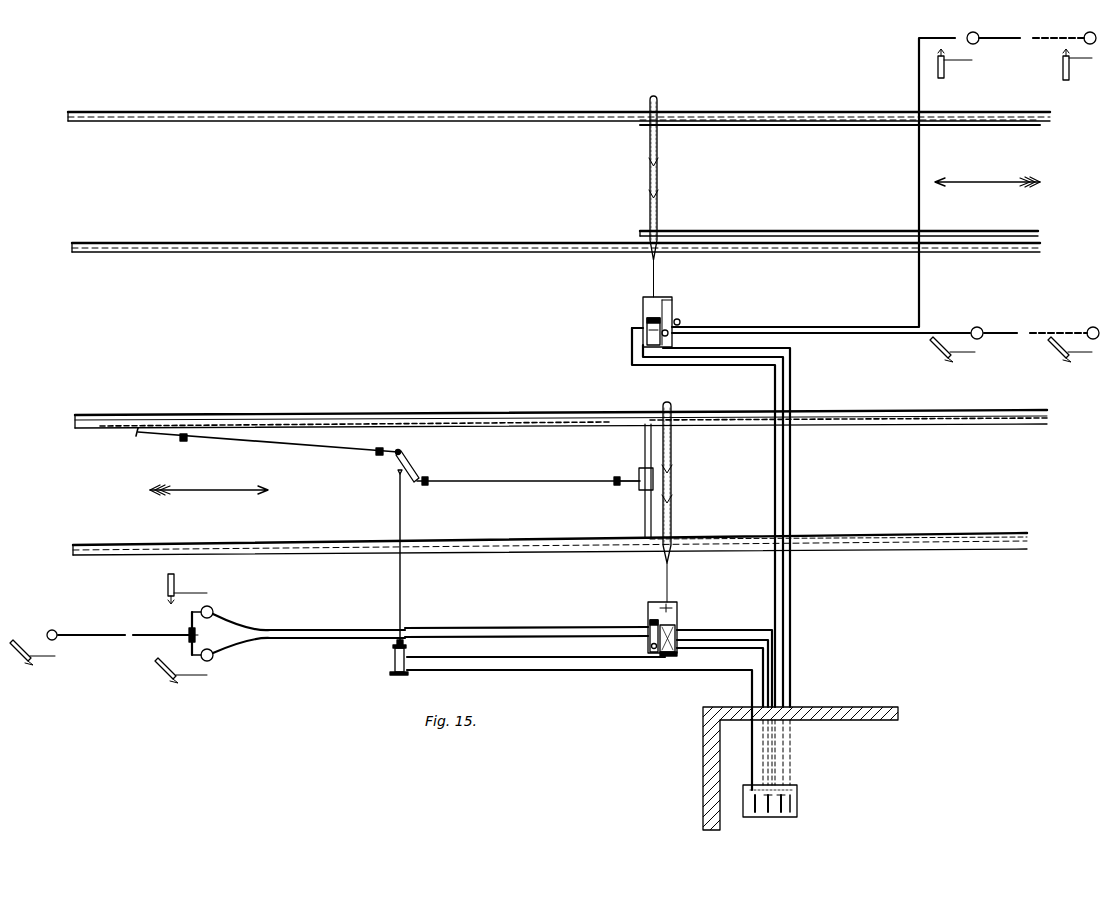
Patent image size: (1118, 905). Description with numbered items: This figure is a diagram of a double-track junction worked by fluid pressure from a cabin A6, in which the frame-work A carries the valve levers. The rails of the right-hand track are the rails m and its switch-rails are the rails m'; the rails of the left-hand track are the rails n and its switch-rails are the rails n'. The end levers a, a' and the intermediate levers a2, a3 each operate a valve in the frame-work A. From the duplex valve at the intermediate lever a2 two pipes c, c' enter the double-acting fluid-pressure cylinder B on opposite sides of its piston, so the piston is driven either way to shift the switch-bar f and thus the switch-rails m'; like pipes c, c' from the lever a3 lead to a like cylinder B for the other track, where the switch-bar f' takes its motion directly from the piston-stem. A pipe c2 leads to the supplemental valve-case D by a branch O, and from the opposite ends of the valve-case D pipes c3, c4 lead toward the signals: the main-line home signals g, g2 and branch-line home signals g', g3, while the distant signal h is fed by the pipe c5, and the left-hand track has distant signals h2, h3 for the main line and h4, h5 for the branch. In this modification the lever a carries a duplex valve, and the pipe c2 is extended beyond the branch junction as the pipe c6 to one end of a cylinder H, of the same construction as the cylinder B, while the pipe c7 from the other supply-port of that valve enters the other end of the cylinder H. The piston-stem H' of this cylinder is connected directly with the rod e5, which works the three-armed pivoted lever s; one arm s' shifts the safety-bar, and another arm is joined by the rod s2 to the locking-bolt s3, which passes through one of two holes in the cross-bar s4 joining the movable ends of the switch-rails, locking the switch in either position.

The rail of the left-hand track n is at (559, 173).
The switch-rail of the left-hand track n' is at (840, 178).
The rail of the right-hand track m is at (560, 476).
The switch-rail of the right-hand track m' is at (573, 478).
The switch-bar f' is at (659, 196).
The switch-bar f is at (671, 502).
The double-acting fluid-pressure cylinder B is at (643, 335).
The supplemental valve-case D is at (672, 322).
The branch O is at (650, 648).
The pipe c3 is at (584, 334).
The pipe c4 is at (591, 493).
The pipe c' is at (726, 566).
The pipe c is at (713, 565).
The pipe c2 is at (720, 556).
The pipe c5 is at (124, 626).
The pipe extension c6 is at (536, 649).
The pipe c7 is at (579, 730).
The branch-line home signal g' is at (606, 325).
The main-line home signal g is at (604, 498).
The main-line home signal g2 is at (559, 510).
The branch-line home signal g3 is at (562, 326).
The distant signal h is at (56, 643).
The signal h' is at (29, 652).
The main-line distant signal h2 is at (1072, 331).
The main-line distant signal h3 is at (1066, 350).
The branch-line distant signal h4 is at (1072, 37).
The branch-line distant signal h5 is at (1077, 64).
The valve d is at (196, 633).
The lever arm s' is at (269, 441).
The three-armed pivoted lever s is at (407, 466).
The rod s2 is at (528, 474).
The locking-bolt s3 is at (636, 473).
The cross-bar s4 is at (640, 480).
The rod e5 is at (407, 557).
The cylinder H is at (393, 660).
The piston-stem H' is at (408, 640).
The cabin A6 is at (801, 770).
The frame-work for levers A is at (776, 793).
The end lever a is at (741, 803).
The end lever a' is at (807, 803).
The intermediate lever a2 is at (765, 813).
The intermediate lever a3 is at (785, 813).